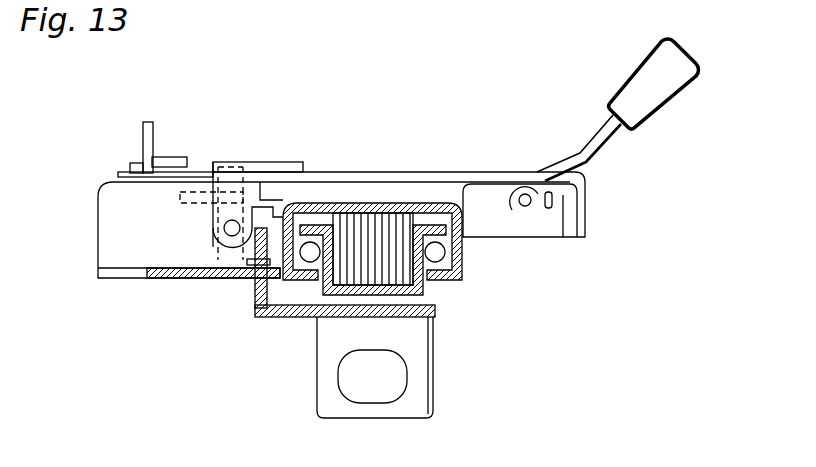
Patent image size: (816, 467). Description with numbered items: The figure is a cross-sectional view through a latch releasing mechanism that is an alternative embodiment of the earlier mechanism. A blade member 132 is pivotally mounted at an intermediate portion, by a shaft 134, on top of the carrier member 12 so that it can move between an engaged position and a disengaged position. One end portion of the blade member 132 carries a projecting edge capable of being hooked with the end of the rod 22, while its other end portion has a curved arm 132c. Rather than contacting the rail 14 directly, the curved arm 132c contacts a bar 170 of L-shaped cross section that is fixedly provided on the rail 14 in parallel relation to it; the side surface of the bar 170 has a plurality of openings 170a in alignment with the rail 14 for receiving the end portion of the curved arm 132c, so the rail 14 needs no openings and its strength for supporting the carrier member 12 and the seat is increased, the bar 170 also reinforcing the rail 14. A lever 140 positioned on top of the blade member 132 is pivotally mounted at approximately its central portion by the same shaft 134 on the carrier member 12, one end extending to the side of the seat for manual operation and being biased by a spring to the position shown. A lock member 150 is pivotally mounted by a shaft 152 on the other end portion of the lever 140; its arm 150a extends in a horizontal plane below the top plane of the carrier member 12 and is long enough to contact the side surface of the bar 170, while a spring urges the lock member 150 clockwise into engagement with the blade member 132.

The carrier member 12 is at (460, 248).
The rail 14 is at (423, 290).
The rod 22 is at (525, 194).
The blade member 132 is at (95, 230).
The curved arm 132c is at (240, 278).
The shaft 134 is at (278, 161).
The lever 140 is at (422, 173).
The lock member 150 is at (198, 166).
The arm 150a is at (237, 245).
The shaft 152 is at (168, 158).
The bar 170 is at (310, 318).
The openings 170a is at (255, 303).